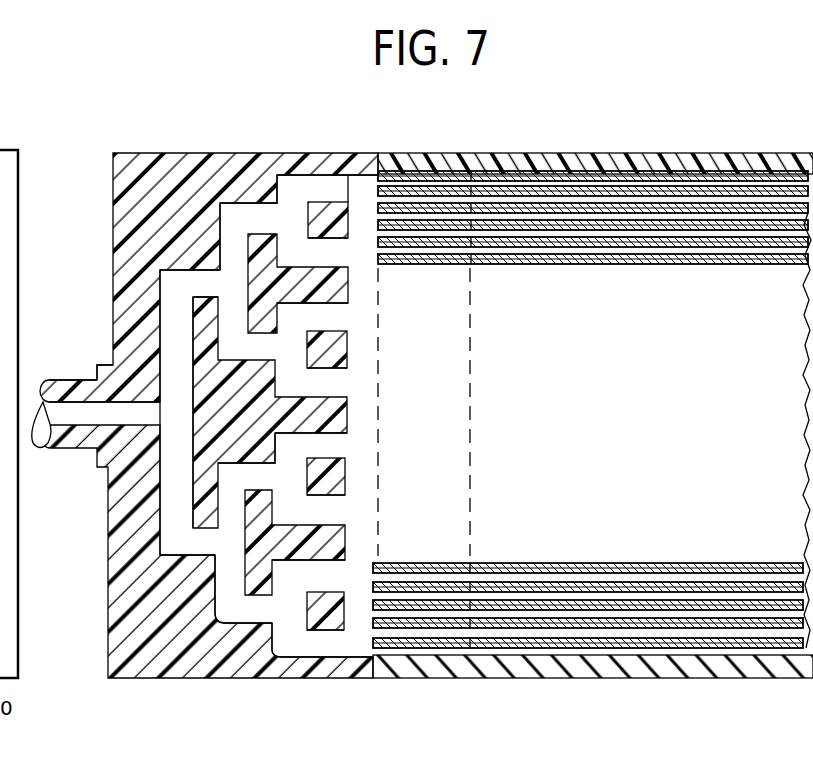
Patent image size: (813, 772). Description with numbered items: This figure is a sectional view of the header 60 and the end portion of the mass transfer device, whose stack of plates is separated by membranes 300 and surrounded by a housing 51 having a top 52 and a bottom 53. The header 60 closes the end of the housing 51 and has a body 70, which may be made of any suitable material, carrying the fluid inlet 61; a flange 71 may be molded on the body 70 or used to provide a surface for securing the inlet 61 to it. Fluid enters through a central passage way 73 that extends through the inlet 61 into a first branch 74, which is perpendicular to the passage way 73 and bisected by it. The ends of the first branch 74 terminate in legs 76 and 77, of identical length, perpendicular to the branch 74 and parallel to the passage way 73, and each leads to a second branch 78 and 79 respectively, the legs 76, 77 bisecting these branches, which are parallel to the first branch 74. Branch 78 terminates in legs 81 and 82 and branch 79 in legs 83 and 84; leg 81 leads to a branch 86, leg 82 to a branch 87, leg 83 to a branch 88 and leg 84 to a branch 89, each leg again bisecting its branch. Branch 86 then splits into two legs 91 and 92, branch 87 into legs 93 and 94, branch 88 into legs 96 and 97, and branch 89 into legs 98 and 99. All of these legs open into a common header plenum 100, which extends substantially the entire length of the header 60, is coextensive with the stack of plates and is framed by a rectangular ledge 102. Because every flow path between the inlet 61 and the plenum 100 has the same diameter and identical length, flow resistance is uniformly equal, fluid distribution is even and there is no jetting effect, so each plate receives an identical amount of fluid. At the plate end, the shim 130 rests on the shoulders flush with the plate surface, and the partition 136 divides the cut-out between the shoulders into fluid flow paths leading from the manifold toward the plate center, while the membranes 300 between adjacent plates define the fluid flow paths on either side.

The housing 51 is at (593, 418).
The top 52 is at (628, 153).
The bottom 53 is at (552, 678).
The header 60 is at (250, 121).
The fluid inlet 61 is at (72, 380).
The body 70 is at (129, 160).
The flange 71 is at (98, 365).
The central passage way 73 is at (88, 430).
The first branch 74 is at (180, 312).
The leg 76 is at (203, 282).
The leg 77 is at (200, 543).
The second branch 78 is at (237, 283).
The second branch 79 is at (228, 550).
The leg 81 is at (258, 222).
The leg 82 is at (262, 345).
The leg 83 is at (250, 470).
The leg 84 is at (257, 605).
The branch 86 is at (288, 220).
The branch 87 is at (300, 348).
The branch 88 is at (298, 478).
The branch 89 is at (286, 628).
The leg 91 is at (325, 190).
The leg 92 is at (340, 262).
The leg 93 is at (340, 327).
The leg 94 is at (340, 390).
The leg 96 is at (340, 455).
The leg 97 is at (340, 518).
The leg 98 is at (340, 585).
The leg 99 is at (340, 652).
The header plenum 100 is at (358, 455).
The rectangular ledge 102 is at (4, 168).
The shim 130 is at (472, 643).
The partition 136 is at (474, 259).
The membrane 300 is at (718, 259).